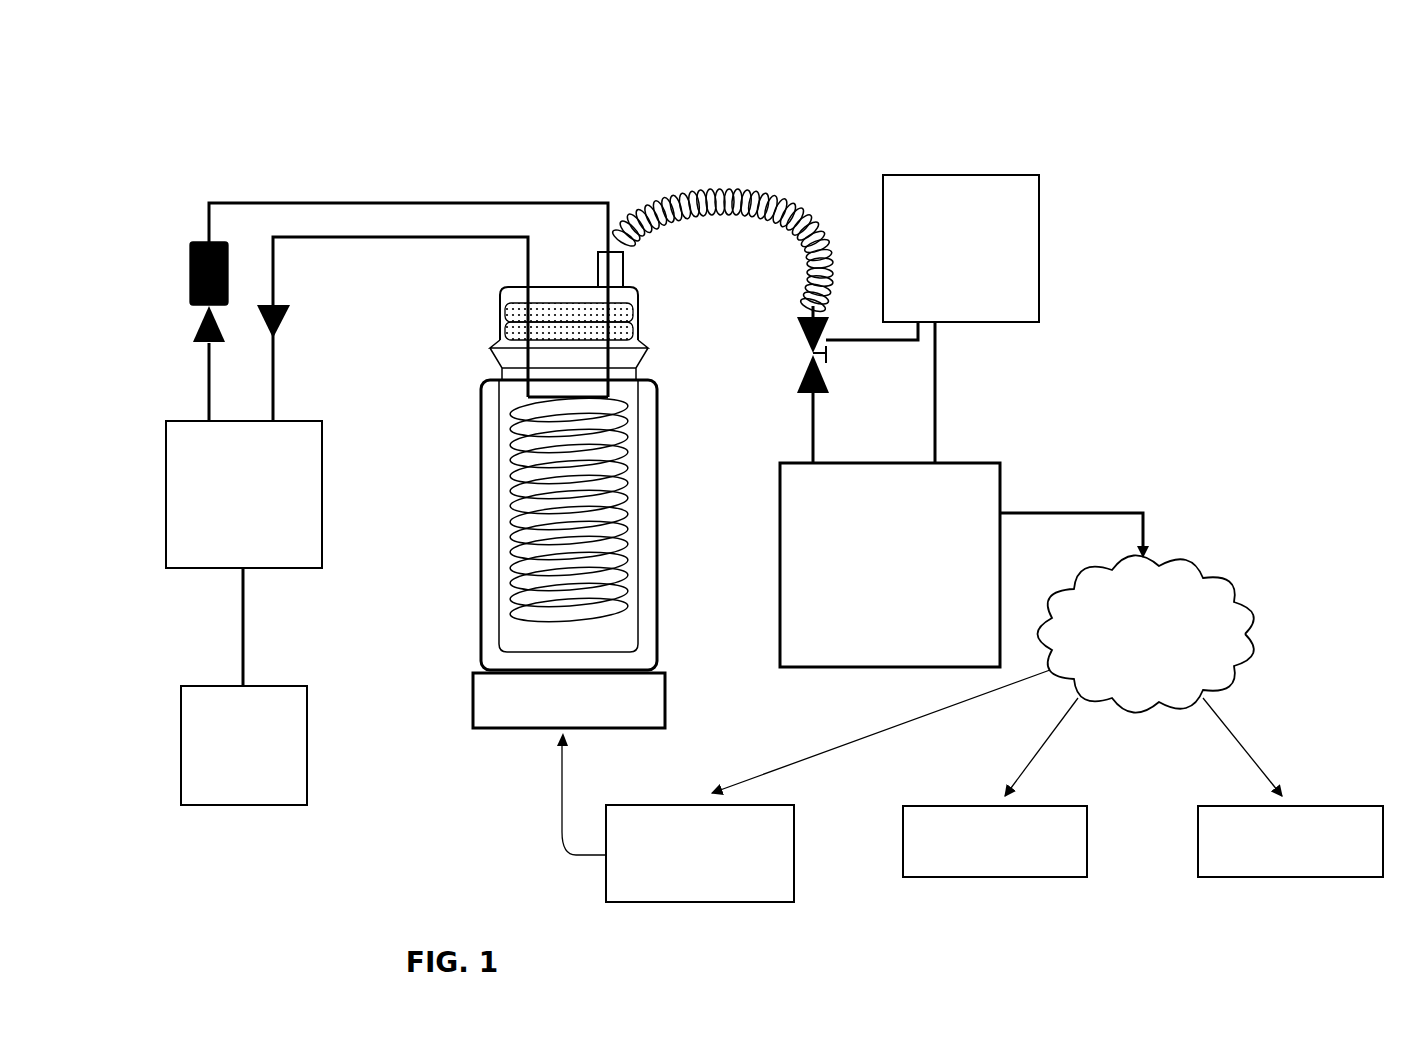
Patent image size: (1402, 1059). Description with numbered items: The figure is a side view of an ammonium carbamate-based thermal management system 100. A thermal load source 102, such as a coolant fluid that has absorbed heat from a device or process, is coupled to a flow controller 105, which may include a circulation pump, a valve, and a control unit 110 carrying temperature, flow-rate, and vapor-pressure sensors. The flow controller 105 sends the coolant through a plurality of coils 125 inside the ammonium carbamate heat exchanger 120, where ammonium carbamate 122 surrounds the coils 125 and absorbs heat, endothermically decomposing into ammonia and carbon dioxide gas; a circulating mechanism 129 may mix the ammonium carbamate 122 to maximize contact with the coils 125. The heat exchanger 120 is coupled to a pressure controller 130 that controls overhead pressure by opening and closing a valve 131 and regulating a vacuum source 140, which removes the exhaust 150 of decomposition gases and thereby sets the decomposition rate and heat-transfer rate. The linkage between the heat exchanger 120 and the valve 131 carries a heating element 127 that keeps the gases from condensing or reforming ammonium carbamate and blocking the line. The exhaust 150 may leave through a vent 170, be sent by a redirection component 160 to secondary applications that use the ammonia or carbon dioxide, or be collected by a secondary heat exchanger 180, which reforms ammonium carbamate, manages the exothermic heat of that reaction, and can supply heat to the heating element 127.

The thermal management system 100 is at (568, 128).
The thermal load source 102 is at (253, 805).
The flow controller 105 is at (322, 493).
The control unit 110 is at (190, 292).
The ammonium carbamate heat exchanger 120 is at (468, 560).
The ammonium carbamate 122 is at (617, 633).
The coils 125 is at (612, 456).
The heating element 127 is at (733, 190).
The circulating mechanism 129 is at (530, 735).
The pressure controller 130 is at (978, 175).
The valve 131 is at (797, 366).
The vacuum source 140 is at (970, 463).
The exhaust 150 is at (1200, 558).
The redirection component 160 is at (1235, 877).
The vent 170 is at (997, 877).
The secondary heat exchanger 180 is at (693, 902).